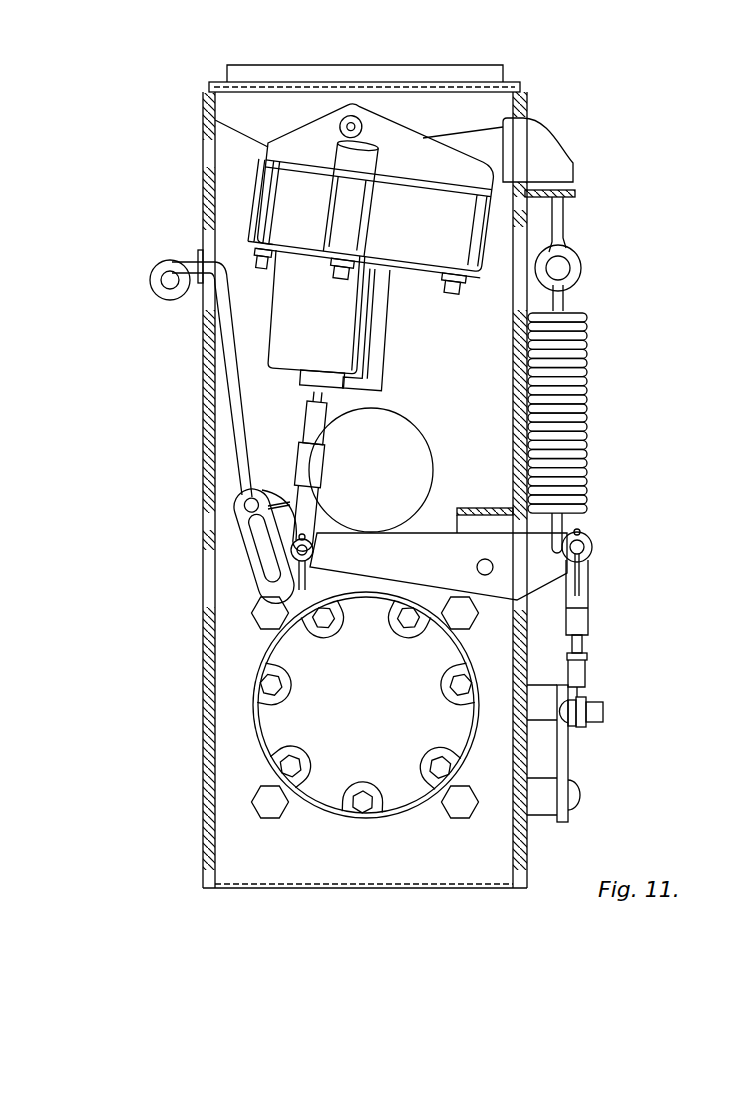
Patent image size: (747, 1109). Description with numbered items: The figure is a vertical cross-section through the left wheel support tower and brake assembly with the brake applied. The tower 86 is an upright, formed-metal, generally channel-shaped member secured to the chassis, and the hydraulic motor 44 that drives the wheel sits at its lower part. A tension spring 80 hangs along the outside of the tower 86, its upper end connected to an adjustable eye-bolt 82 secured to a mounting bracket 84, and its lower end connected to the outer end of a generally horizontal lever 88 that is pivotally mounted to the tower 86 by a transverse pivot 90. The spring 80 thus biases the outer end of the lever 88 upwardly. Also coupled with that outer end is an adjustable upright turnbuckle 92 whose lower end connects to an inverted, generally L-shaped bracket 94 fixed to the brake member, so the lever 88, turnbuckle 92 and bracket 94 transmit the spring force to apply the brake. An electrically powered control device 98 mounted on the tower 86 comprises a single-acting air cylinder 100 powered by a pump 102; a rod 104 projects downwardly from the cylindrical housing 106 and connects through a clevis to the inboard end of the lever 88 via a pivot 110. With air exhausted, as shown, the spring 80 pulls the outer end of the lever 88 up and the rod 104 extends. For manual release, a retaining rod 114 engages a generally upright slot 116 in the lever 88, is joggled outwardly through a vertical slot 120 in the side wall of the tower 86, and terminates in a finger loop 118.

The reversible hydraulic motor 44 is at (272, 733).
The tension spring 80 is at (580, 363).
The adjustable eye-bolt 82 is at (557, 218).
The mounting bracket 84 is at (537, 152).
The tower 86 is at (541, 77).
The lever 88 is at (436, 543).
The transverse pivot 90 is at (485, 576).
The turnbuckle 92 is at (583, 597).
The L-shaped bracket 94 is at (565, 778).
The control device 98 is at (319, 323).
The air cylinder 100 is at (284, 378).
The pump 102 is at (298, 198).
The rod 104 is at (317, 433).
The cylindrical housing 106 is at (350, 322).
The pivot 110 is at (314, 549).
The manual retaining rod 114 is at (246, 462).
The upright slot 116 is at (266, 549).
The finger loop 118 is at (160, 284).
The vertical slot 120 is at (208, 298).